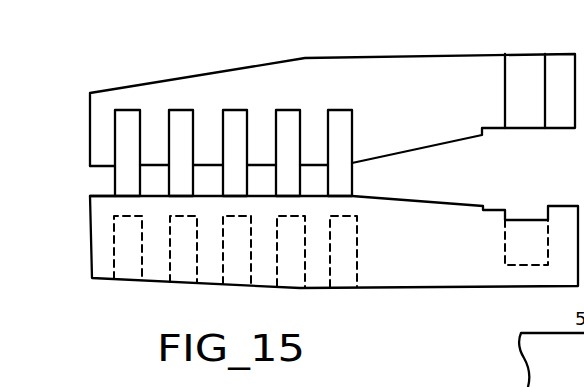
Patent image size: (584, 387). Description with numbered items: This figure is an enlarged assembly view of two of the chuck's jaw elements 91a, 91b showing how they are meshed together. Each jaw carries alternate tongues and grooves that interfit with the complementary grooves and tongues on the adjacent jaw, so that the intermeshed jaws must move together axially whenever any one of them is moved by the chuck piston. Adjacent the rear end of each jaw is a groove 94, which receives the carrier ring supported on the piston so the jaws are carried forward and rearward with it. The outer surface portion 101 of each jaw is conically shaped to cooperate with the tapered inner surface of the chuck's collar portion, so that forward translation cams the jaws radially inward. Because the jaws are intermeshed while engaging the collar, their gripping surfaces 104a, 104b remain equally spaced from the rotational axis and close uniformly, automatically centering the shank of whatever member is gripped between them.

The jaw element 91a is at (345, 67).
The jaw element 91b is at (395, 272).
The groove 94 is at (527, 63).
The outer surface portion 101 is at (174, 78).
The gripping surface 104a is at (94, 167).
The gripping surface 104b is at (97, 194).